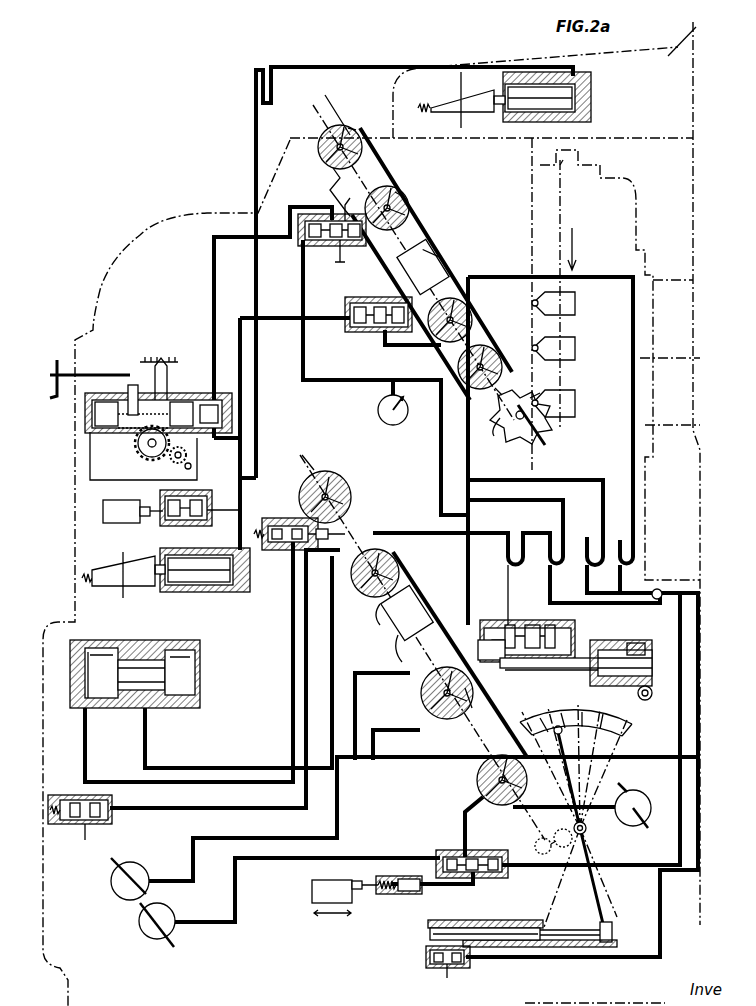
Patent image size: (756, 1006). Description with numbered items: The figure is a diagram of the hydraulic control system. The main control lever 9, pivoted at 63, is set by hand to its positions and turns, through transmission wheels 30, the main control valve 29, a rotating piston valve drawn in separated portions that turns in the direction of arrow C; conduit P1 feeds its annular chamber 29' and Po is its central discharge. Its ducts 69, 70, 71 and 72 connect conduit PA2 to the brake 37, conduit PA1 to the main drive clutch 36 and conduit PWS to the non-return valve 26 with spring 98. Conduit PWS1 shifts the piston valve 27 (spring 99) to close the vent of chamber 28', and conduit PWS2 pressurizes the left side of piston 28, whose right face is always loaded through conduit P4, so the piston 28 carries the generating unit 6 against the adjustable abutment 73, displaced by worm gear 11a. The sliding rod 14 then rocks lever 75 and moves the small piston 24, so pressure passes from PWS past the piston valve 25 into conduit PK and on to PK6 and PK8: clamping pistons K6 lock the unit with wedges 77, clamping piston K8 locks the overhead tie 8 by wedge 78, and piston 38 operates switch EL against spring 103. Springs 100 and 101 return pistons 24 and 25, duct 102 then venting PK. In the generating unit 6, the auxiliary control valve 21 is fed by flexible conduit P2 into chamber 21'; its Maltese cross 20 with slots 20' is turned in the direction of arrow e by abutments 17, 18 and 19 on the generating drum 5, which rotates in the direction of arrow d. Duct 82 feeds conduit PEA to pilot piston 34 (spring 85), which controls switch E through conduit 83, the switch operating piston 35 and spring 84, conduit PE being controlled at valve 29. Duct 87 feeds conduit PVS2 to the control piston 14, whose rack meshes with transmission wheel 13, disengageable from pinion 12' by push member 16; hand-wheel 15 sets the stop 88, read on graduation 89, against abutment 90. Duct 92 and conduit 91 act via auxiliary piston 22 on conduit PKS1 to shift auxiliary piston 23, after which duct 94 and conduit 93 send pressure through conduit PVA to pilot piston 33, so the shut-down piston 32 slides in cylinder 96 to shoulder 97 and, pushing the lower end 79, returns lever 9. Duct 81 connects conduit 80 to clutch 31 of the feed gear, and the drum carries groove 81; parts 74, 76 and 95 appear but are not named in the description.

The control unit frame 5 is at (580, 168).
The housing 6 is at (158, 226).
The section boundary 8 is at (690, 39).
The selector lever 9 is at (596, 884).
The roller 11a is at (648, 700).
The pinion 12' is at (150, 461).
The gear wheel 13 is at (136, 444).
The rack piston 14 is at (165, 400).
The hand lever 15 is at (88, 367).
The pivot pin 16 is at (191, 466).
The switch 17 is at (575, 303).
The switch 18 is at (575, 348).
The switch 19 is at (575, 403).
The cam 20 is at (529, 419).
The cam follower 20' is at (517, 384).
The cam disc 21 is at (360, 171).
The cam sleeve 21' is at (437, 265).
The valve 22 is at (326, 214).
The valve 23 is at (386, 302).
The valve stem 24 is at (506, 622).
The valve 25 is at (530, 625).
The valve 26 is at (285, 525).
The valve 27 is at (105, 806).
The piston 28 is at (135, 694).
The piston rod 28' is at (68, 697).
The cam disc 29 is at (397, 631).
The cam sleeve 29' is at (422, 612).
The ratchet 30 is at (535, 846).
The gauge 31 is at (637, 796).
The cylinder 32 is at (522, 928).
The valve stem 33 is at (452, 970).
The valve stem 34 is at (484, 880).
The spring valve 35 is at (402, 895).
The gauge 36 is at (170, 918).
The gauge 37 is at (138, 866).
The valve 38 is at (200, 522).
The pivot 63 is at (587, 829).
The follower 69 is at (380, 610).
The cam disc 70 is at (422, 690).
The cam follower 71 is at (431, 700).
The cam disc 72 is at (345, 486).
The block 73 is at (620, 654).
The rod 74 is at (592, 678).
The piston 75 is at (480, 650).
The piston 76 is at (490, 644).
The cone 77 is at (148, 576).
The cone 78 is at (453, 104).
The pin 79 is at (612, 935).
The line 80 is at (545, 806).
The lever 81 is at (452, 773).
The cam disc 82 is at (472, 333).
The line 83 is at (445, 888).
The rod 84 is at (372, 898).
The valve 85 is at (442, 866).
The valve stem 87 is at (343, 258).
The rack 88 is at (149, 341).
The pawl 89 is at (163, 356).
The stop 90 is at (128, 394).
The lever 91 is at (331, 170).
The follower 92 is at (352, 128).
The line 93 is at (405, 345).
The cam disc 94 is at (466, 308).
The valve 95 is at (426, 958).
The piston 96 is at (558, 936).
The rod 97 is at (598, 930).
The valve stem 98 is at (270, 550).
The spring 99 is at (66, 796).
The rod 100 is at (520, 666).
The valve part 101 is at (546, 628).
The rod 102 is at (545, 676).
The valve 103 is at (172, 522).
The follower C is at (400, 650).
The electromagnet E is at (356, 885).
The electromagnet EL is at (103, 510).
The clutch K6 is at (206, 588).
The clutch K8 is at (591, 98).
The pressure line P1 is at (496, 688).
The pressure line P2 is at (630, 442).
The pressure line P4 is at (190, 768).
The pressure line PA1 is at (256, 860).
The pressure line PA2 is at (362, 632).
The pressure line PE is at (465, 828).
The pressure line PEA is at (470, 463).
The pressure line PK is at (423, 515).
The pressure line PK6 is at (240, 482).
The pressure line PK8 is at (259, 386).
The pressure line PKS1 is at (284, 316).
The pressure line PVS2 is at (213, 290).
The pressure line PVA is at (324, 381).
The pressure line PWS is at (424, 534).
The pressure line PWS1 is at (306, 618).
The pressure line PWS2 is at (293, 684).
The zero pressure Po is at (482, 893).
The direction d is at (580, 249).
The direction e is at (487, 425).